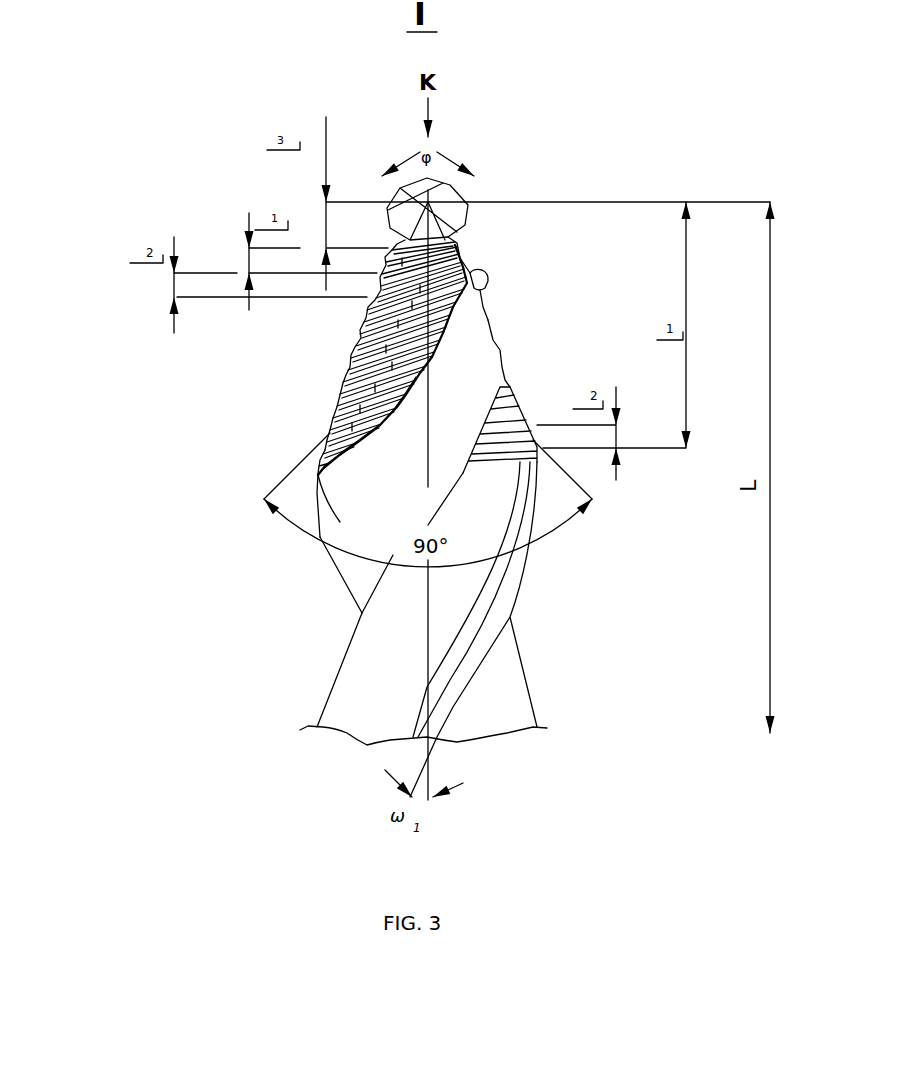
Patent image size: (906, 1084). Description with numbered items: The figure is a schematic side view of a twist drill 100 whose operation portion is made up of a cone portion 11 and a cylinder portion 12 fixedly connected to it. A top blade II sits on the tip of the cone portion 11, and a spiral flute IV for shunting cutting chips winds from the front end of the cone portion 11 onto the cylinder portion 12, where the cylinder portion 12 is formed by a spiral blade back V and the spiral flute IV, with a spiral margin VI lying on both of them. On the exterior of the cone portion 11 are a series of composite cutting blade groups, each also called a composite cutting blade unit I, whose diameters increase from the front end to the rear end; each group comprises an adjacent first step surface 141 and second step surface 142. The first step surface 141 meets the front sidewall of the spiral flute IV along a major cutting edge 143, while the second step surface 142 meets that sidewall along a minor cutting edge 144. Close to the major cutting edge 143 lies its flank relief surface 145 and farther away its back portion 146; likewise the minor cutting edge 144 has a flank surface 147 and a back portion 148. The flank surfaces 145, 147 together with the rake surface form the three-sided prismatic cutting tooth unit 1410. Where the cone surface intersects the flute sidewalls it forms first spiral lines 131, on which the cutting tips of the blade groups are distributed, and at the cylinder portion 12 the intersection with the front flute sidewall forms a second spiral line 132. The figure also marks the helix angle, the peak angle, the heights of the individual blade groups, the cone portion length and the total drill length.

The twist drill 100 is at (432, 886).
The cone portion 11 is at (430, 347).
The cylinder portion 12 is at (505, 694).
The first spiral lines 131 is at (313, 463).
The second spiral line 132 is at (450, 713).
The first step surface 141 is at (500, 370).
The second step surface 142 is at (507, 387).
The major cutting edge 143 is at (570, 228).
The minor cutting edge 144 is at (560, 255).
The flank relief surface of the major cutting edge 145 is at (372, 420).
The back portion of the major cutting edge 146 is at (385, 350).
The flank surface of the minor cutting edge 147 is at (350, 452).
The back portion of the minor cutting edge 148 is at (392, 368).
The cutting tooth unit 1410 is at (362, 335).
The composite cutting blade unit I is at (486, 285).
The top blade II is at (428, 202).
The spiral flute IV is at (358, 565).
The spiral blade back V is at (380, 643).
The spiral margin VI is at (520, 577).